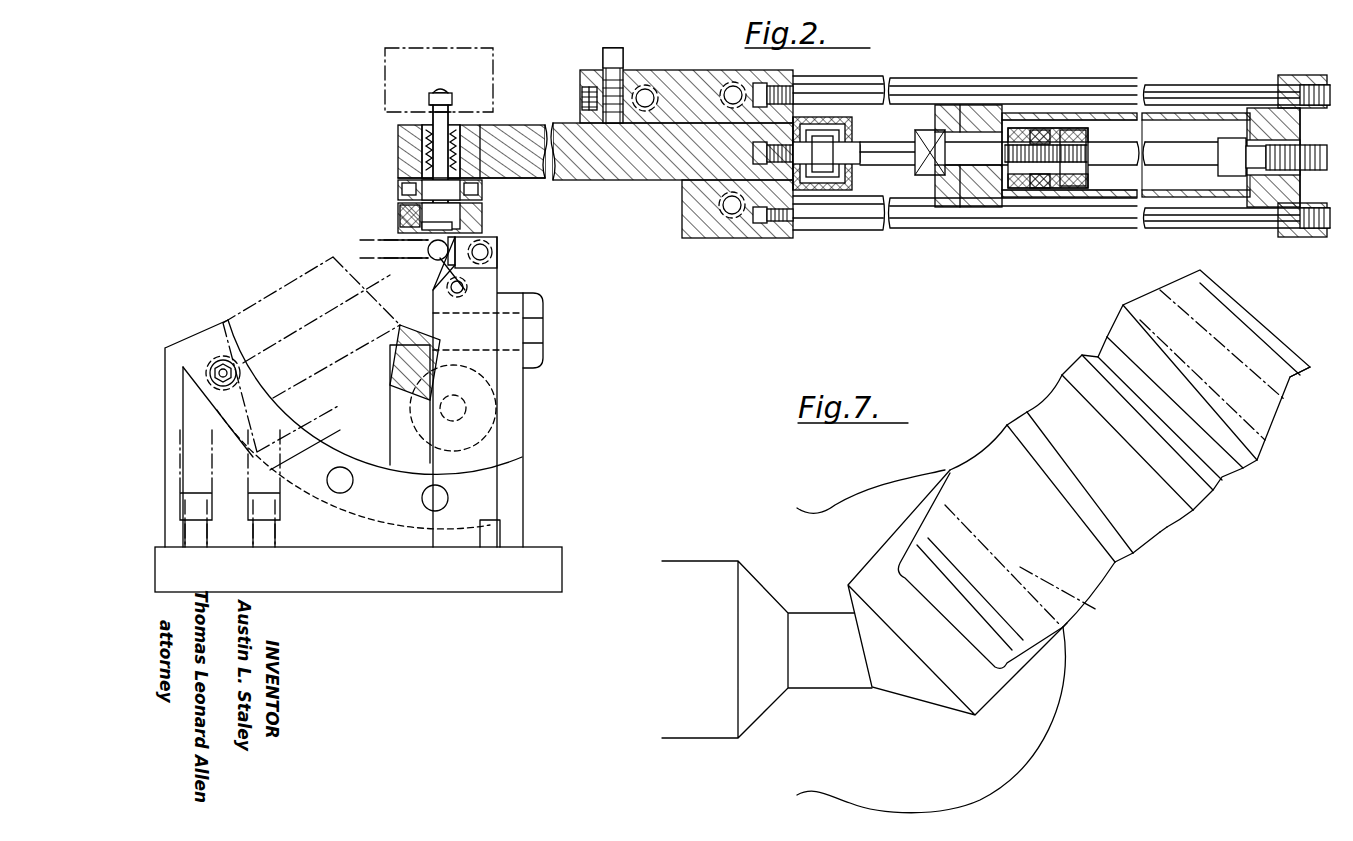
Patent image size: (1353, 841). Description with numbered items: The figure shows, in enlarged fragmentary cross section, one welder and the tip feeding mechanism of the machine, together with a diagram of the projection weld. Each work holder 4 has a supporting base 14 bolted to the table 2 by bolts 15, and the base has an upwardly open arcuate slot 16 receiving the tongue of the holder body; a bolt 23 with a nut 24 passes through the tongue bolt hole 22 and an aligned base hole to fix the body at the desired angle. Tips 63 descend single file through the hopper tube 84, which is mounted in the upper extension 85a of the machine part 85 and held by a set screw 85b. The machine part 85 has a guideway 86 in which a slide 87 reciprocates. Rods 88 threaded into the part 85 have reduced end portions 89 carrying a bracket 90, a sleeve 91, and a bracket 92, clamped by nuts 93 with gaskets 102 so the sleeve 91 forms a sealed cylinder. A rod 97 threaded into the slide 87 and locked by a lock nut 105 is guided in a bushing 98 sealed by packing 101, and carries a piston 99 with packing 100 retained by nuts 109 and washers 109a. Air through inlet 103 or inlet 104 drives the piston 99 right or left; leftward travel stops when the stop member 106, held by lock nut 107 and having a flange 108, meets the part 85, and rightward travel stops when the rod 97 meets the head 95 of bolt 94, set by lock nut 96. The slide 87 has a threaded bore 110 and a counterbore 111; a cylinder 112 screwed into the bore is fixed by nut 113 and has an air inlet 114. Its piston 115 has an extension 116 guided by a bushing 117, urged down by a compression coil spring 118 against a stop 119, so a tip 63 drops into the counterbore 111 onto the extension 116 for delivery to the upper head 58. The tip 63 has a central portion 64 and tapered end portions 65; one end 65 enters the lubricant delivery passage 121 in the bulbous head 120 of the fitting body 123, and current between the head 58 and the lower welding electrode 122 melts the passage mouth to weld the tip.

In FIG. 2, the table 2 is at (358, 575).
In FIG. 2, the work holder 4 is at (512, 413).
In FIG. 2, the supporting base 14 is at (505, 522).
In FIG. 2, the bolts 15 is at (195, 536).
In FIG. 2, the arcuate slot 16 is at (355, 392).
In FIG. 2, the bolt hole 22 is at (210, 362).
In FIG. 2, the bolt 23 is at (240, 372).
In FIG. 2, the nut 24 is at (218, 360).
In FIG. 2, the upper head 58 is at (379, 82).
In FIG. 2, the tip 63 is at (622, 80).
In FIG. 7, the tip 63 is at (1197, 506).
In FIG. 7, the central portion 64 is at (1166, 532).
In FIG. 7, the tapered end portion 65 is at (1262, 335).
In FIG. 2, the hopper tube 84 is at (620, 50).
In FIG. 2, the machine part 85 is at (700, 80).
In FIG. 2, the upper extension 85a is at (582, 90).
In FIG. 2, the set screw 85b is at (582, 104).
In FIG. 2, the guideway 86 is at (670, 180).
In FIG. 2, the slide 87 is at (610, 180).
In FIG. 2, the rods 88 is at (862, 90).
In FIG. 2, the reduced end portions 89 is at (1165, 85).
In FIG. 2, the bracket 90 is at (965, 110).
In FIG. 2, the sleeve 91 is at (1105, 115).
In FIG. 2, the bracket 92 is at (1268, 108).
In FIG. 2, the nuts 93 is at (1312, 75).
In FIG. 2, the bolt 94 is at (1315, 145).
In FIG. 2, the head 95 is at (1220, 157).
In FIG. 2, the lock nut 96 is at (1300, 185).
In FIG. 2, the rod 97 is at (905, 160).
In FIG. 2, the bushing 98 is at (915, 135).
In FIG. 2, the piston 99 is at (1035, 128).
In FIG. 2, the packing 100 is at (1070, 188).
In FIG. 2, the packing 101 is at (1000, 200).
In FIG. 2, the gaskets 102 is at (1012, 197).
In FIG. 2, the compressed air inlet 103 is at (975, 105).
In FIG. 2, the compressed air inlet 104 is at (1262, 225).
In FIG. 2, the lock nut 105 is at (790, 148).
In FIG. 2, the stop member 106 is at (825, 190).
In FIG. 2, the lock nut 107 is at (838, 190).
In FIG. 2, the circumferential flange 108 is at (800, 190).
In FIG. 2, the nuts 109 is at (1025, 128).
In FIG. 2, the washers 109a is at (1040, 190).
In FIG. 2, the bore 110 is at (424, 178).
In FIG. 2, the counterbore 111 is at (398, 130).
In FIG. 2, the cylinder 112 is at (424, 160).
In FIG. 2, the nut 113 is at (482, 190).
In FIG. 2, the compressed air inlet 114 is at (400, 212).
In FIG. 2, the piston 115 is at (482, 208).
In FIG. 2, the extension 116 is at (450, 135).
In FIG. 2, the bushing 117 is at (490, 135).
In FIG. 2, the compression coil spring 118 is at (424, 150).
In FIG. 2, the stop 119 is at (425, 226).
In FIG. 7, the bulbous head 120 is at (1050, 712).
In FIG. 7, the lubricant delivery passage 121 is at (1010, 670).
In FIG. 2, the lower welding electrode 122 is at (360, 248).
In FIG. 2, the fitting body 123 is at (497, 262).